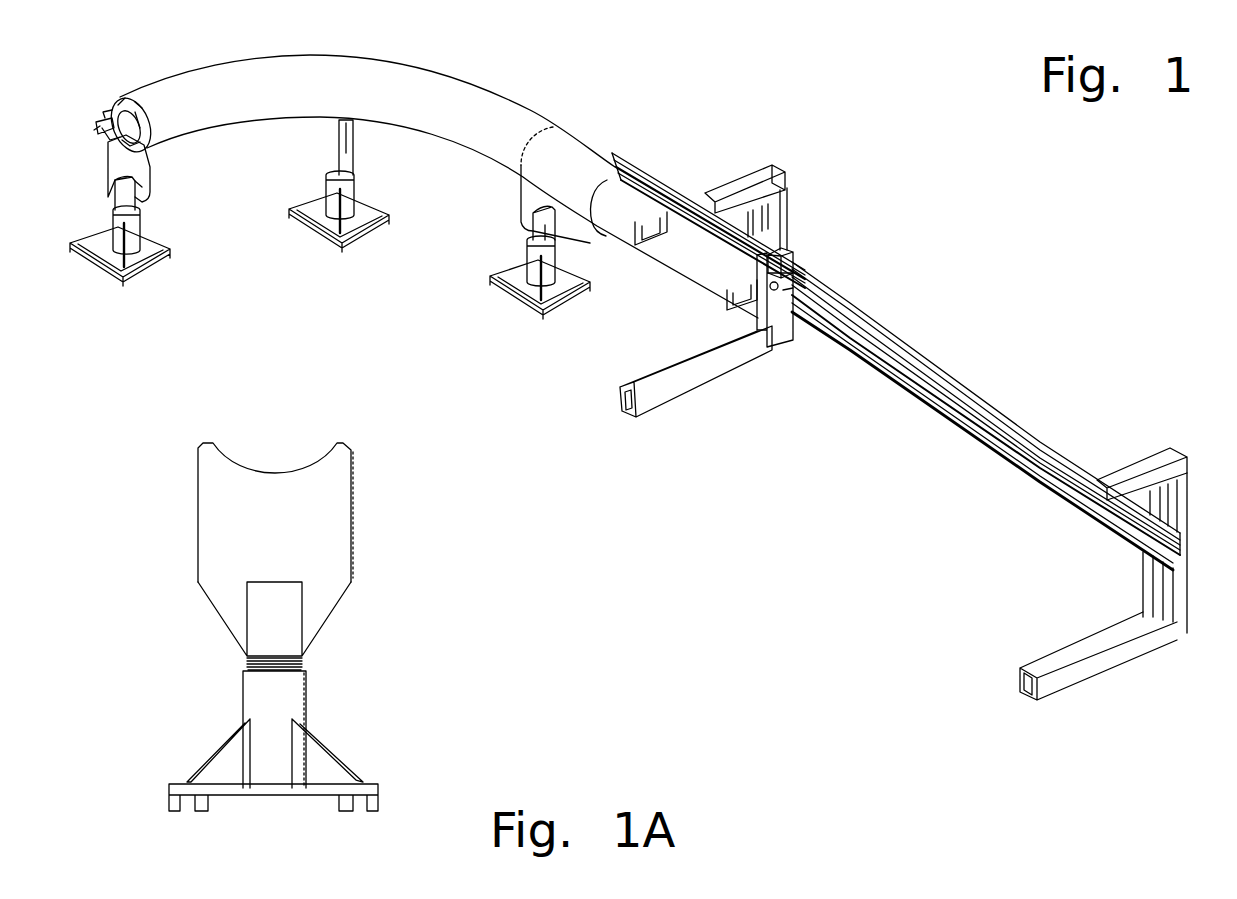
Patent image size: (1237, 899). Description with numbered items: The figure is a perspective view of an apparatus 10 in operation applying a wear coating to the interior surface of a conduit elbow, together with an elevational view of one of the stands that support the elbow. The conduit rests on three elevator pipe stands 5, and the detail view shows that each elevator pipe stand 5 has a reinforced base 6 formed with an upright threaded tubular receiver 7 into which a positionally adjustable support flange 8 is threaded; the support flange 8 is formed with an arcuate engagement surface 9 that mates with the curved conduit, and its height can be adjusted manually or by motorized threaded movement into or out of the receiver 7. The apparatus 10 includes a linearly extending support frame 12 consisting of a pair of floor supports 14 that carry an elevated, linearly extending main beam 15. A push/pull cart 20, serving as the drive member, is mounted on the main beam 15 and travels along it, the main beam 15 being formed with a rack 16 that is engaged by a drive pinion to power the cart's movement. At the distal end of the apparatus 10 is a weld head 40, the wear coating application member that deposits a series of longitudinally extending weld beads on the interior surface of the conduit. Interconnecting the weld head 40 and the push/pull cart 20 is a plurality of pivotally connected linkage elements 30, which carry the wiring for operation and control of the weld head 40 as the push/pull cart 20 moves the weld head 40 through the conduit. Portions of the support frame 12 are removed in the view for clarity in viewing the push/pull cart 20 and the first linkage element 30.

In FIG. 1, the elevator pipe stand 5 is at (318, 231).
In FIG. 1A, the elevator pipe stand 5 is at (317, 594).
In FIG. 1A, the reinforced base 6 is at (231, 760).
In FIG. 1A, the threaded tubular receiver 7 is at (295, 695).
In FIG. 1A, the support flange 8 is at (250, 564).
In FIG. 1A, the arcuate engagement surface 9 is at (260, 470).
In FIG. 1, the apparatus 10 is at (703, 107).
In FIG. 1, the support frame 12 is at (978, 297).
In FIG. 1, the floor supports 14 is at (657, 395).
In FIG. 1, the main beam 15 is at (972, 402).
In FIG. 1, the rack 16 is at (997, 437).
In FIG. 1, the push/pull cart 20 is at (783, 312).
In FIG. 1, the linkage elements 30 is at (702, 270).
In FIG. 1, the weld head 40 is at (113, 110).